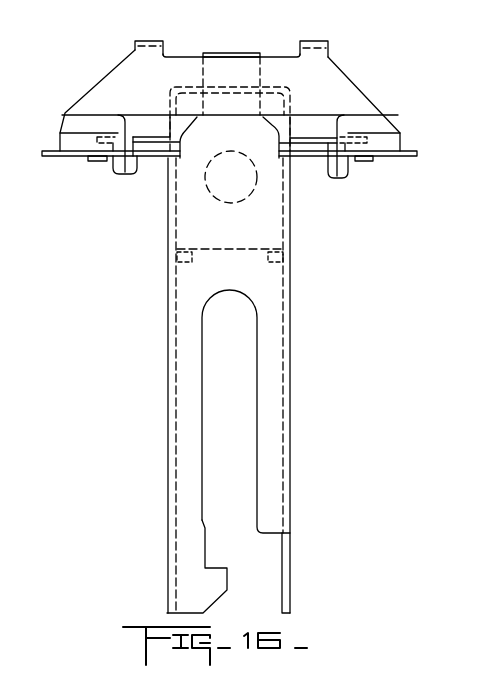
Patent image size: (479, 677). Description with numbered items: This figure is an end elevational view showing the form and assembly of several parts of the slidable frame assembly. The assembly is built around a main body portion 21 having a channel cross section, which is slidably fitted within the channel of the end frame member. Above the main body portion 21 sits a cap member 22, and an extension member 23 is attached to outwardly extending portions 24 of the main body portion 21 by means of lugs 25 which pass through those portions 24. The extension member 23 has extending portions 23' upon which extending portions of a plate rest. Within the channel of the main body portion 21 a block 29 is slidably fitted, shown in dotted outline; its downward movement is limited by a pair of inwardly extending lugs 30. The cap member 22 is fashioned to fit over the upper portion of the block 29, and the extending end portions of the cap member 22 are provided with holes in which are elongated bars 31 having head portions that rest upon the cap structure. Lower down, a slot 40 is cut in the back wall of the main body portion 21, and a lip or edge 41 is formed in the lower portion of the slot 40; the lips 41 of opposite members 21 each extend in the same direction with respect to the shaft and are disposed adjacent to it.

The main body portion 21 is at (283, 417).
The cap member 22 is at (292, 103).
The extension member 23 is at (261, 100).
The extending portions 23' is at (244, 31).
The outwardly extending portions 24 is at (44, 158).
The lugs 25 is at (98, 162).
The blocks 29 is at (273, 216).
The inwardly extending lugs 30 is at (185, 262).
The elongated bars 31 is at (130, 168).
The slot 40 is at (240, 488).
The lip or edge 41 is at (226, 568).